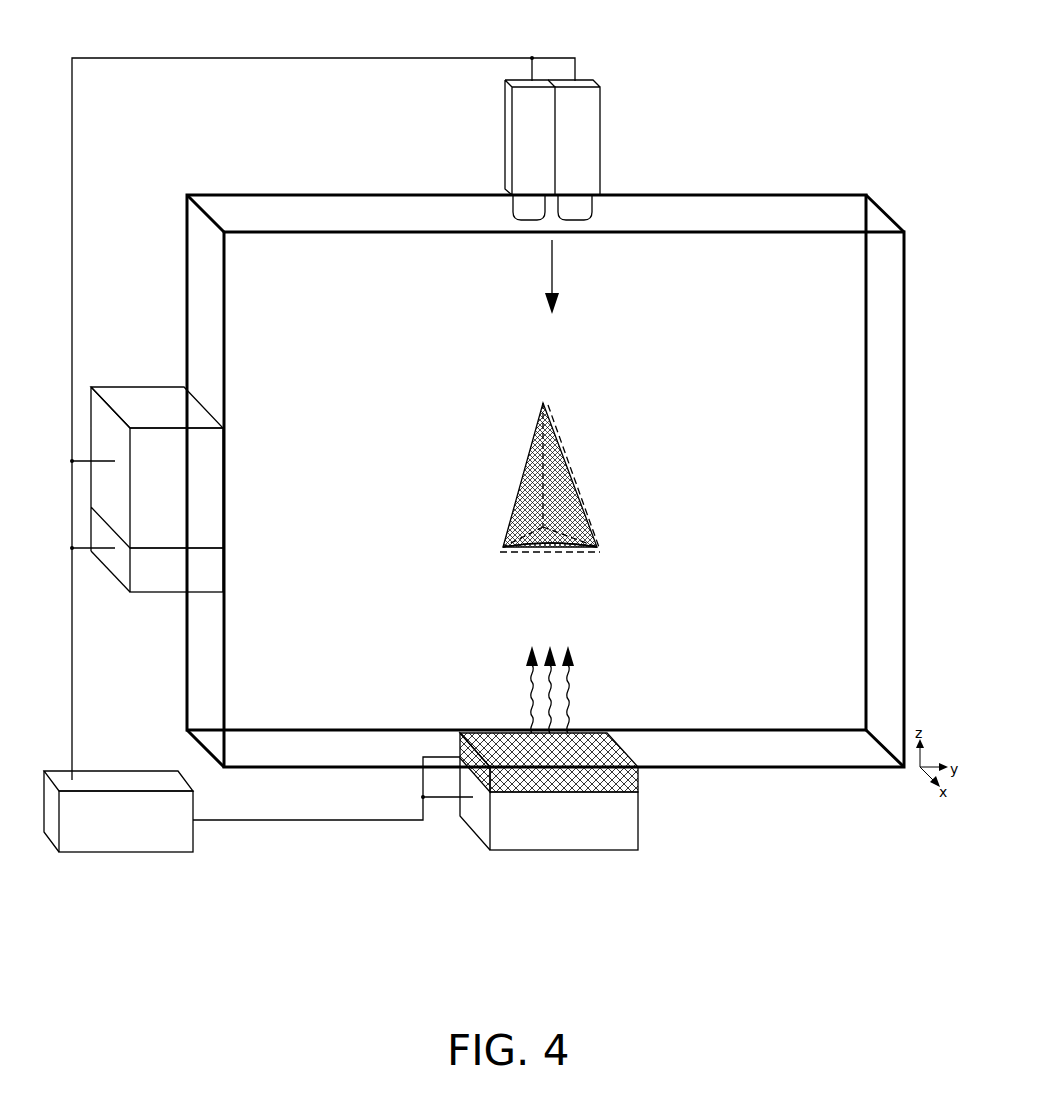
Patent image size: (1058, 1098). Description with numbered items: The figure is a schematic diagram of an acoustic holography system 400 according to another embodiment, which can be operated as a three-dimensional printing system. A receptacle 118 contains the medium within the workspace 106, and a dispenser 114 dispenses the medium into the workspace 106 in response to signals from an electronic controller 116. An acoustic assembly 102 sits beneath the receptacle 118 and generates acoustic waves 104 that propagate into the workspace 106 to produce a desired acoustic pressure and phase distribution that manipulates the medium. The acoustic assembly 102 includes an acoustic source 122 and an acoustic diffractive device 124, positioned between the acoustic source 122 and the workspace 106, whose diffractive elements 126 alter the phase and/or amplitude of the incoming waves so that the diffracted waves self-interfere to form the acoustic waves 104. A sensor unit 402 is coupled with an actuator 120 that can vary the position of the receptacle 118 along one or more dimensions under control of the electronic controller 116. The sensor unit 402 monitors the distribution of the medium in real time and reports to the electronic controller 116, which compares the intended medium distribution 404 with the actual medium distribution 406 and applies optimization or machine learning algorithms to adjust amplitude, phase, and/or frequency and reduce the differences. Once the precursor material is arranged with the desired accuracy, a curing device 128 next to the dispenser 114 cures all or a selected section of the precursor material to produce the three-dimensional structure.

The acoustic holography system 400 is at (842, 96).
The receptacle 118 is at (222, 193).
The dispenser 114 is at (502, 112).
The curing device 128 is at (603, 112).
The sensor unit 402 is at (160, 386).
The actuator 120 is at (165, 594).
The electronic controller 116 is at (176, 853).
The workspace 106 is at (600, 499).
The actual medium distribution 406 is at (517, 470).
The intended medium distribution 404 is at (535, 556).
The acoustic assembly 102 is at (551, 761).
The diffractive elements 126 is at (478, 733).
The acoustic diffractive device 124 is at (640, 780).
The acoustic source 122 is at (640, 818).
The acoustic waves 104 is at (606, 689).